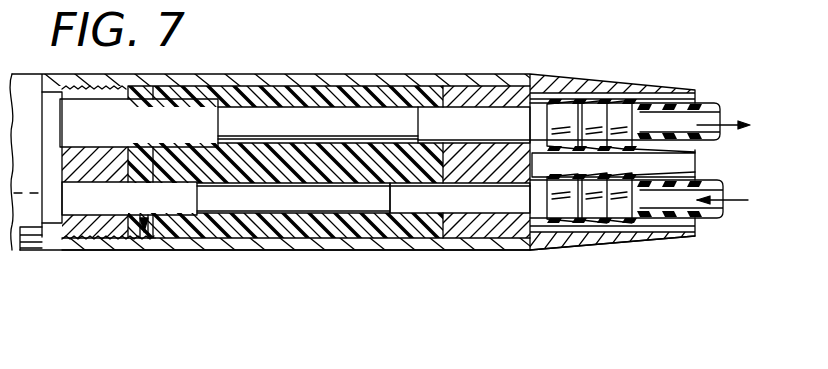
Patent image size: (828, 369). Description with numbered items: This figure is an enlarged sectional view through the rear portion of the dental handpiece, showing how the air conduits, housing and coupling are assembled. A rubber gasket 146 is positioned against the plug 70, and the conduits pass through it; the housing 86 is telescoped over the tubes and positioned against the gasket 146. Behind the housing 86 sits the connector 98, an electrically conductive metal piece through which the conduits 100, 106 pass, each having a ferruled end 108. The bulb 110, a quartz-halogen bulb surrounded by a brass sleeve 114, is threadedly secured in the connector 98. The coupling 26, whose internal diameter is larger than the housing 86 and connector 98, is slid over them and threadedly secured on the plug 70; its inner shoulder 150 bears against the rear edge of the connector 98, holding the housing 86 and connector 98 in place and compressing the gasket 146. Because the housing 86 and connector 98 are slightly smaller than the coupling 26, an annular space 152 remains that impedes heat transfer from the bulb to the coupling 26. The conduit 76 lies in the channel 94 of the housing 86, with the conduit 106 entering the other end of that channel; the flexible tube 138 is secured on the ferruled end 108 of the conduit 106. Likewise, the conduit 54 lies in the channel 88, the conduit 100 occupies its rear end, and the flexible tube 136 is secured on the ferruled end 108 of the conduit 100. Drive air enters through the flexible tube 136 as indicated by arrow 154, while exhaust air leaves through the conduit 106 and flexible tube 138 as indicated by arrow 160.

The coupling 26 is at (448, 75).
The conduit 54 is at (140, 208).
The plug 70 is at (98, 223).
The conduit 76 is at (173, 131).
The housing 86 is at (316, 218).
The channel 88 is at (307, 212).
The channel 94 is at (271, 134).
The connector 98 is at (470, 217).
The conduit 100 is at (489, 210).
The conduit 106 is at (499, 132).
The ferruled end 108 is at (597, 110).
The bulb 110 is at (300, 140).
The brass sleeve 114 is at (348, 137).
The flexible tube 136 is at (712, 220).
The flexible tube 138 is at (702, 102).
The rubber gasket 146 is at (143, 217).
The inner shoulder 150 is at (528, 236).
The annular space 152 is at (238, 242).
The arrow 154 is at (742, 198).
The arrow 160 is at (730, 123).